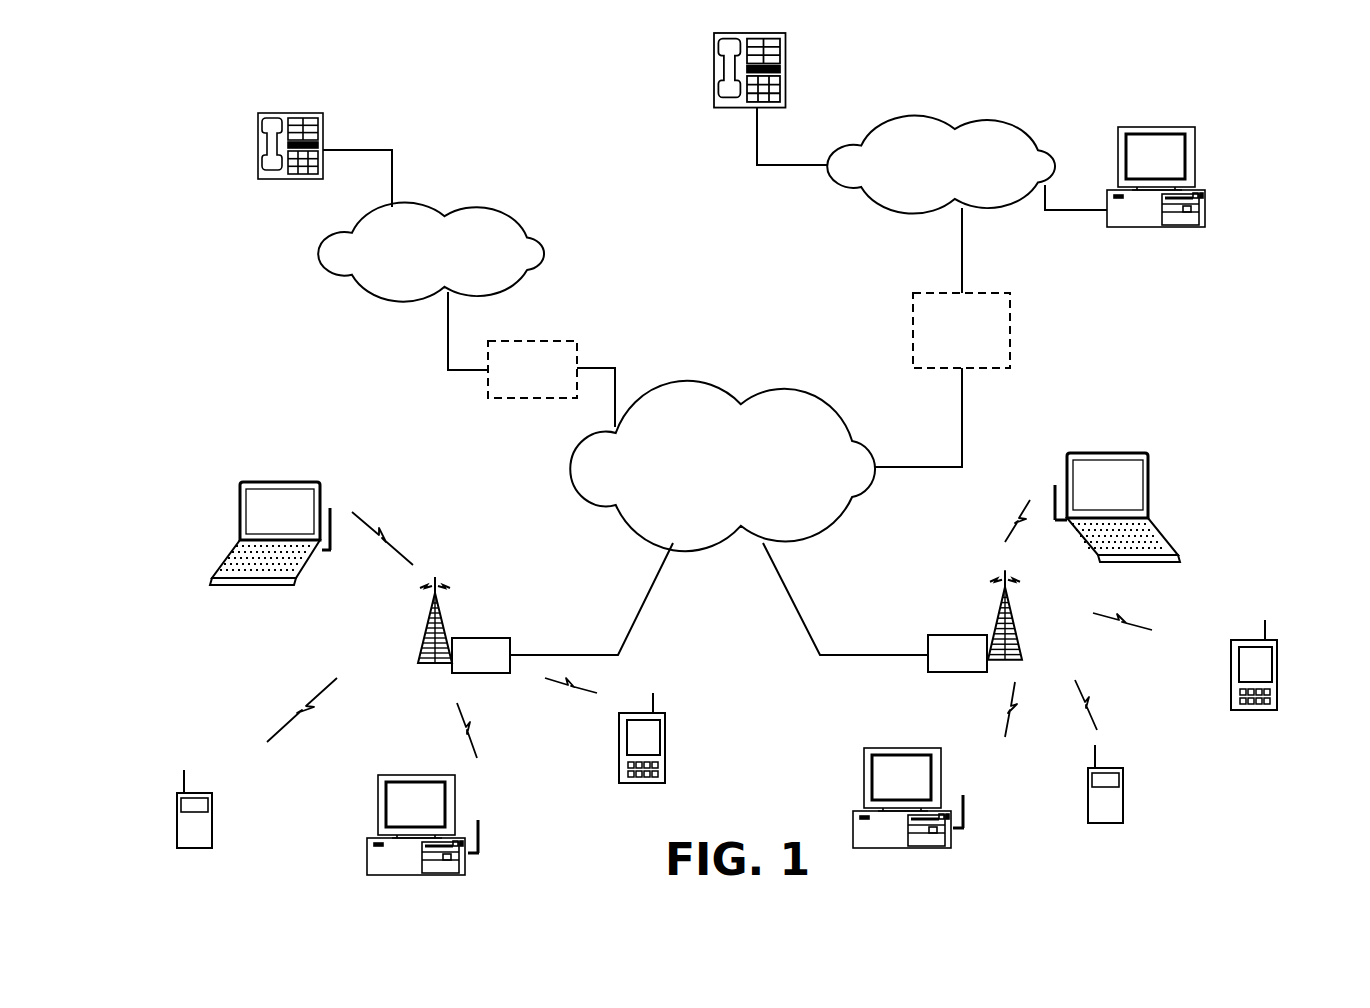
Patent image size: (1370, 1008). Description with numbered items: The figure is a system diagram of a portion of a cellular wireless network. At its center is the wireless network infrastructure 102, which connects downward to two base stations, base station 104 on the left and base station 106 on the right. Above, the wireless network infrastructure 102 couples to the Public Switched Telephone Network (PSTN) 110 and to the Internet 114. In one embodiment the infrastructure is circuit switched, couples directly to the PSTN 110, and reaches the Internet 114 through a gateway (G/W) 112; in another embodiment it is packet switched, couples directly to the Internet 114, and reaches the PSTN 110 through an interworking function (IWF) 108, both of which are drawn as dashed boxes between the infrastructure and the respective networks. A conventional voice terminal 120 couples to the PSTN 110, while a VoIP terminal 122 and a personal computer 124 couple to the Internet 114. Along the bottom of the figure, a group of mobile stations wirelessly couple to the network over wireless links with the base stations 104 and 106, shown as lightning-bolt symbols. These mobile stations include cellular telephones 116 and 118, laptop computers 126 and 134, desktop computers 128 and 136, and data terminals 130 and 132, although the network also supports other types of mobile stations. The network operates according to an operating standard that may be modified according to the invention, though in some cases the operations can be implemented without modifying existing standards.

The wireless network infrastructure 102 is at (797, 390).
The base station 104 is at (490, 638).
The base station 106 is at (948, 634).
The interworking function (IWF) 108 is at (548, 340).
The Public Switched Telephone Network (PSTN) 110 is at (490, 207).
The gateway (G/W) 112 is at (985, 293).
The Internet 114 is at (1000, 123).
The cellular telephone 116 is at (213, 819).
The cellular telephone 118 is at (1123, 795).
The conventional voice terminal 120 is at (312, 112).
The VoIP terminal 122 is at (778, 32).
The personal computer 124 is at (1193, 156).
The laptop computer 126 is at (288, 480).
The desktop computer 128 is at (453, 807).
The data terminal 130 is at (666, 760).
The data terminal 132 is at (1277, 688).
The laptop computer 134 is at (1100, 453).
The desktop computer 136 is at (942, 778).